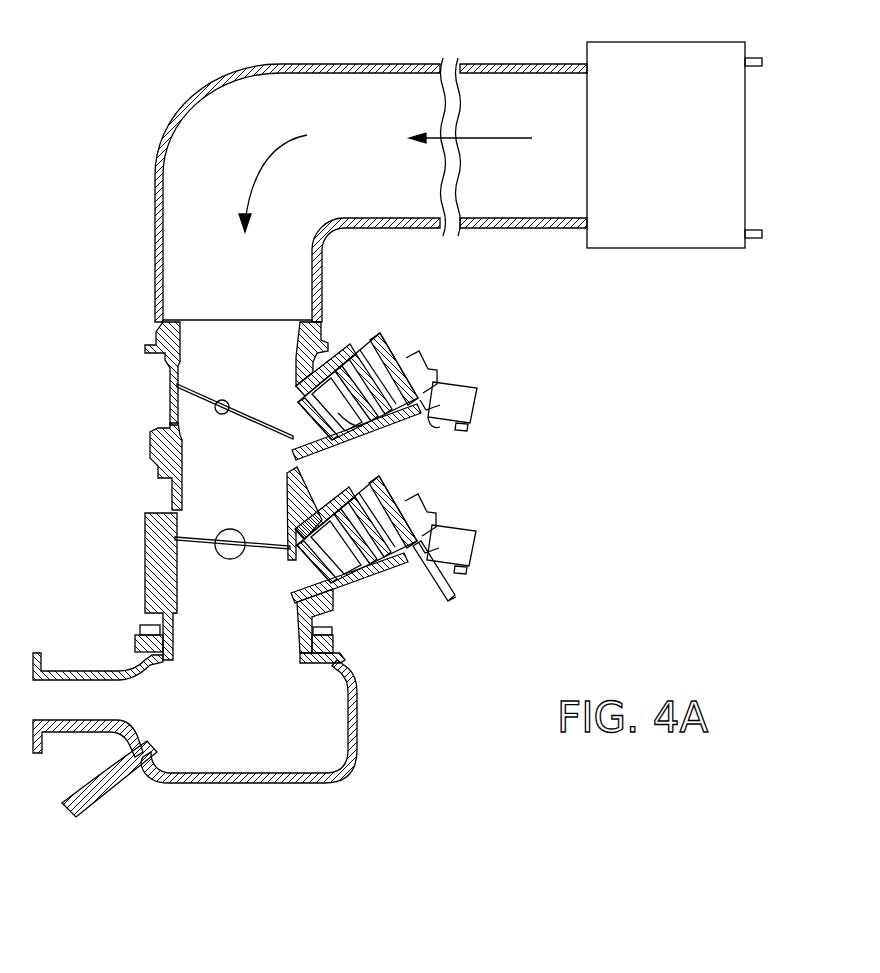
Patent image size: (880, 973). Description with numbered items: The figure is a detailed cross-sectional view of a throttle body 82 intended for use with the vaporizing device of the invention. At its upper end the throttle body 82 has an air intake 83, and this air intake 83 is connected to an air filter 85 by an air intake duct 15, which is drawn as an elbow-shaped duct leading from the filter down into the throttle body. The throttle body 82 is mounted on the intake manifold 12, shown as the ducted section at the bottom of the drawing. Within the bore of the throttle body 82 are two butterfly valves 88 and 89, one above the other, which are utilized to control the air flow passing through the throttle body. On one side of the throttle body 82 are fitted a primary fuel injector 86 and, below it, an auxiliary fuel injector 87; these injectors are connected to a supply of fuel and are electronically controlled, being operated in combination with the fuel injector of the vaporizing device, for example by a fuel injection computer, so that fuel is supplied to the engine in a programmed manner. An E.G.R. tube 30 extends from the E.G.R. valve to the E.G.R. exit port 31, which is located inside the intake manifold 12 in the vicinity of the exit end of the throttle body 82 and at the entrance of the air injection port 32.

The intake manifold 12 is at (358, 727).
The air intake duct 15 is at (204, 90).
The E.G.R. tube 30 is at (113, 780).
The E.G.R. exit port 31 is at (160, 742).
The air injection port 32 is at (293, 660).
The throttle body 82 is at (160, 447).
The air intake 83 is at (160, 333).
The air filter 85 is at (622, 50).
The primary fuel injector 86 is at (363, 428).
The auxiliary fuel injector 87 is at (372, 576).
The butterfly valve 88 is at (177, 400).
The butterfly valve 89 is at (145, 560).